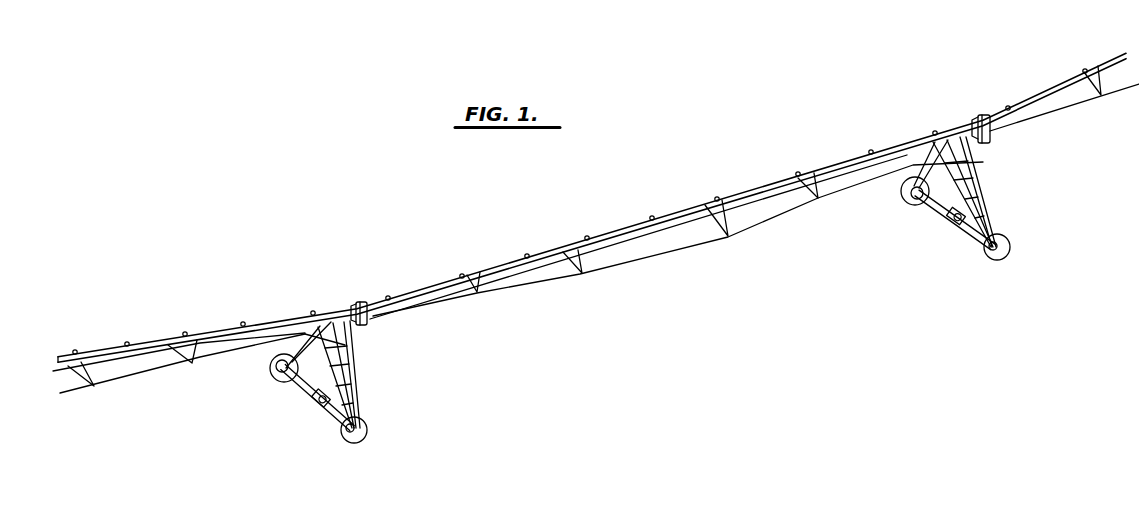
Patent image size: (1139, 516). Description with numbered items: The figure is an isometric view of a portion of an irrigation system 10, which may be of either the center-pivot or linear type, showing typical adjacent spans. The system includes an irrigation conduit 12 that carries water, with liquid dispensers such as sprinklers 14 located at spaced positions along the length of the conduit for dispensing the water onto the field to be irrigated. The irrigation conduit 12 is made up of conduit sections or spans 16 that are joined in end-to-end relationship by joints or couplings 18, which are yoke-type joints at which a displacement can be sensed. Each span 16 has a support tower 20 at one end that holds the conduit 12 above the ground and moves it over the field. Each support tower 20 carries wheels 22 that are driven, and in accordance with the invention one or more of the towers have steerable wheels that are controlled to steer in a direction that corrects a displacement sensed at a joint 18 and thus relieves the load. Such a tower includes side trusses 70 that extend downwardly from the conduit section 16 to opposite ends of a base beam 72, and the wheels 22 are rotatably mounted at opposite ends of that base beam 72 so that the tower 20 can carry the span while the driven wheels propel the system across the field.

The irrigation system 10 is at (711, 152).
The irrigation conduit 12 is at (544, 248).
The sprinklers 14 is at (128, 340).
The conduit sections or spans 16 is at (147, 344).
The joints or couplings 18 is at (358, 300).
The support tower 20 is at (356, 395).
The wheels 22 is at (351, 441).
The side trusses 70 is at (312, 375).
The base beam 72 is at (333, 414).